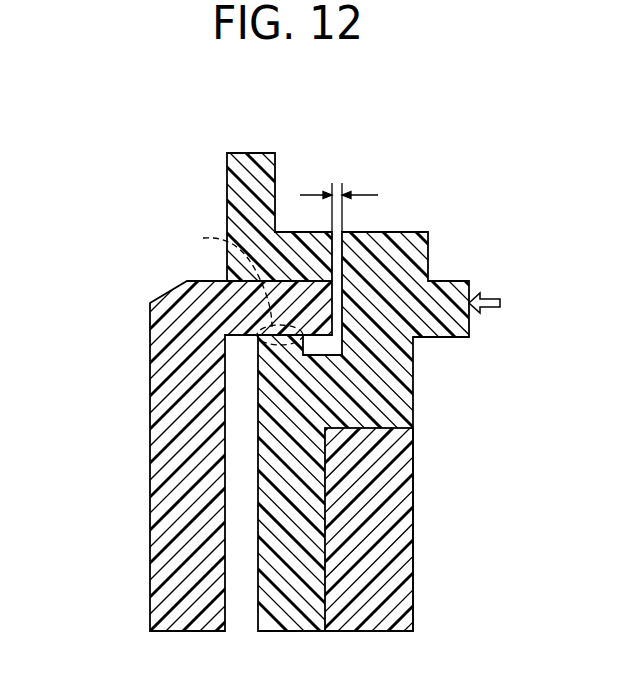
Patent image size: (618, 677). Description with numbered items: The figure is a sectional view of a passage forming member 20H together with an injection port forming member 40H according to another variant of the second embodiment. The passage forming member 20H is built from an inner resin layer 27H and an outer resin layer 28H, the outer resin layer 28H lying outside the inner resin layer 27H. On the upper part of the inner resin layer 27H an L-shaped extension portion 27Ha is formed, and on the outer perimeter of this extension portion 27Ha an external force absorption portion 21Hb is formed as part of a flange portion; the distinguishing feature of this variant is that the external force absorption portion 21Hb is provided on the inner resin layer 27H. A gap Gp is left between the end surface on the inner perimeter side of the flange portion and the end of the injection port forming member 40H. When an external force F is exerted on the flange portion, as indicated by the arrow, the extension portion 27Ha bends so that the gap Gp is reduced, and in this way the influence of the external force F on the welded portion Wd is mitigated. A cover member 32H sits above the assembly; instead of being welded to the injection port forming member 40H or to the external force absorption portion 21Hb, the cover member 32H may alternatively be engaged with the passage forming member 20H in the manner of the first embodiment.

The passage forming member 20H is at (413, 592).
The external force absorption portion 21Hb is at (470, 327).
The inner resin layer 27H is at (323, 532).
The extension portion 27Ha is at (415, 363).
The outer resin layer 28H is at (413, 467).
The cover member 32H is at (227, 193).
The injection port forming member 40H is at (150, 353).
The gap Gp is at (339, 188).
The welded portion Wd is at (230, 286).
The external force F is at (492, 297).